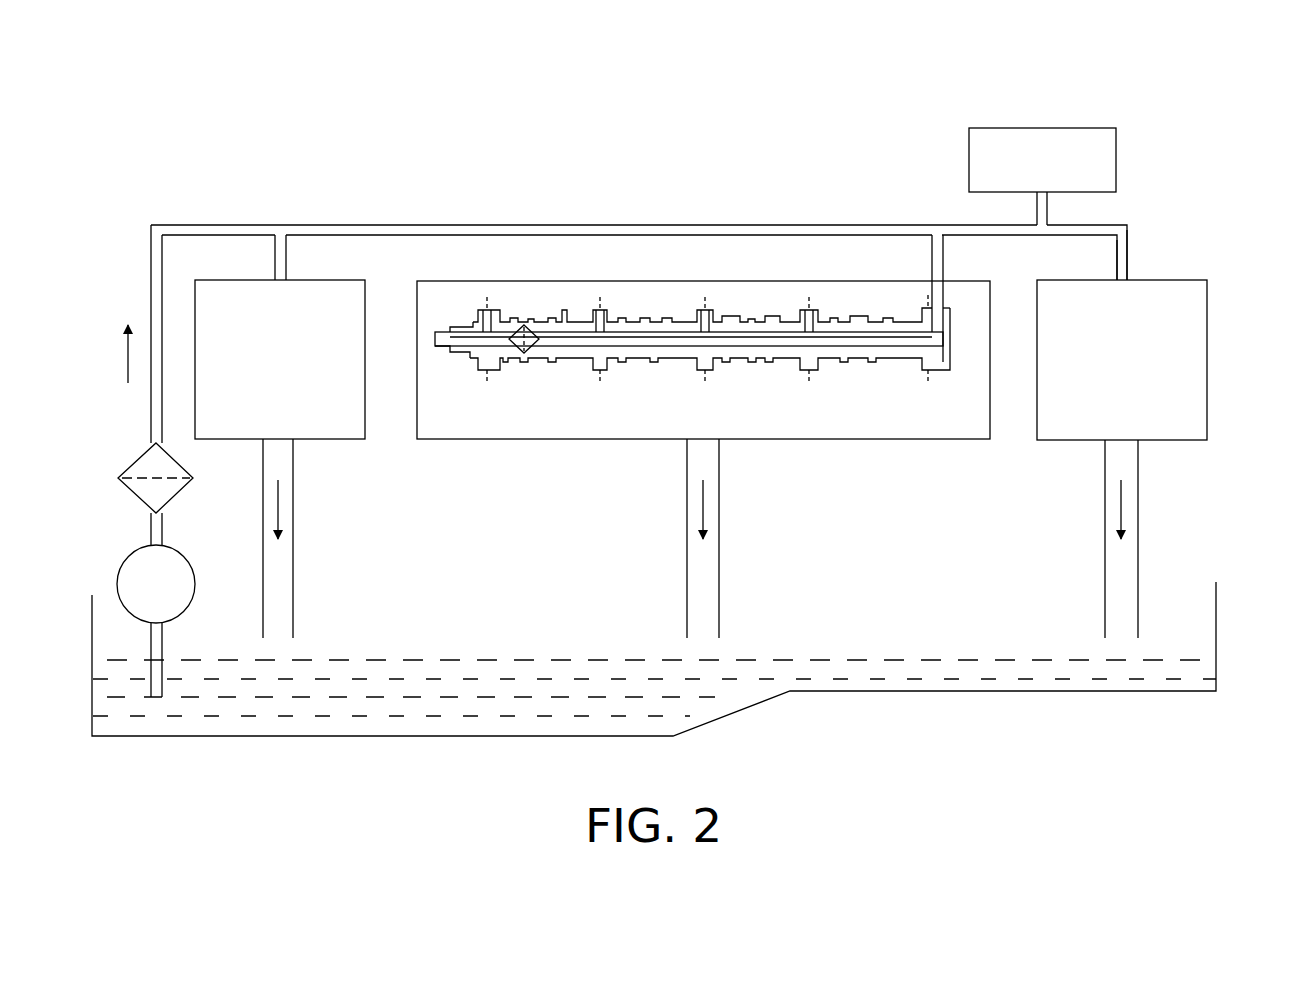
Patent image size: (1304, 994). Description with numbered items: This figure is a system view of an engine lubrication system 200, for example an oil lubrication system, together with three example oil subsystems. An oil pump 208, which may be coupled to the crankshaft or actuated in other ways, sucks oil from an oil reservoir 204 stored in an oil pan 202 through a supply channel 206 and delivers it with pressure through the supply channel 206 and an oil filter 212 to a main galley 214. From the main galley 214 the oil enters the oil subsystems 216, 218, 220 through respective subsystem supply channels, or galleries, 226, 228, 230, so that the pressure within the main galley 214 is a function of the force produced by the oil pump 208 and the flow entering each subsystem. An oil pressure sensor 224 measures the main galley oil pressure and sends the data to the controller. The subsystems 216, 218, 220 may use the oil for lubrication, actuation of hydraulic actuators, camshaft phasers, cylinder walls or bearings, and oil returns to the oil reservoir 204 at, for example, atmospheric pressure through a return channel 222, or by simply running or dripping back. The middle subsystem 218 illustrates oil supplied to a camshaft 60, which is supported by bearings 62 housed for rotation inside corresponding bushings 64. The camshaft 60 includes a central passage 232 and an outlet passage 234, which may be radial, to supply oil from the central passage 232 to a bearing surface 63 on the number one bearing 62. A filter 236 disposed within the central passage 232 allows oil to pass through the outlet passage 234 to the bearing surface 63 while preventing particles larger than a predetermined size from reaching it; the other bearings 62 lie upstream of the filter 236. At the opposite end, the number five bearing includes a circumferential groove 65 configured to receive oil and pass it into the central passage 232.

The engine lubrication system 200 is at (1199, 195).
The oil pan 202 is at (668, 738).
The oil reservoir 204 is at (515, 705).
The supply channel 206 is at (151, 266).
The oil pump 208 is at (123, 560).
The oil filter 212 is at (142, 453).
The main galley 214 is at (683, 225).
The oil subsystem 216 is at (257, 425).
The oil subsystem 218 is at (591, 430).
The oil subsystem 220 is at (1100, 426).
The return channel 222 is at (295, 536).
The oil pressure sensor 224 is at (1037, 128).
The subsystem supply channel 226 is at (286, 257).
The subsystem supply channel 228 is at (943, 260).
The subsystem supply channel 230 is at (1127, 250).
The central passage 232 is at (760, 340).
The outlet passage 234 is at (472, 319).
The filter 236 is at (540, 330).
The camshaft 60 is at (906, 362).
The bearing 62 is at (471, 363).
The bearing surface 63 is at (481, 309).
The bushing 64 is at (490, 376).
The circumferential groove 65 is at (943, 367).